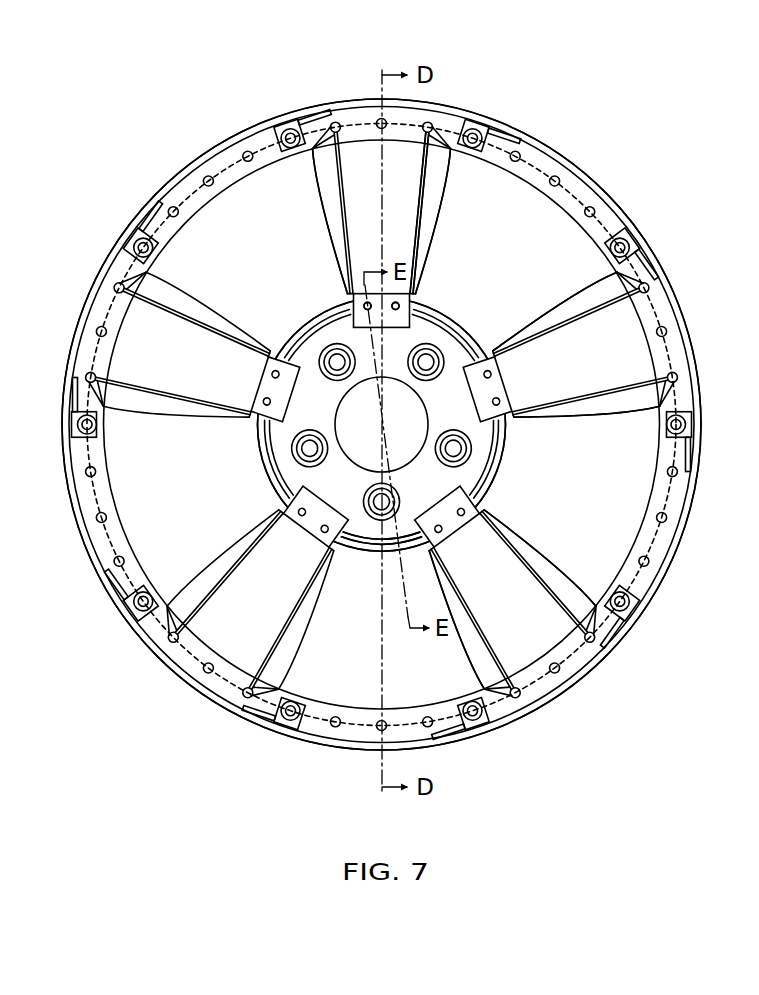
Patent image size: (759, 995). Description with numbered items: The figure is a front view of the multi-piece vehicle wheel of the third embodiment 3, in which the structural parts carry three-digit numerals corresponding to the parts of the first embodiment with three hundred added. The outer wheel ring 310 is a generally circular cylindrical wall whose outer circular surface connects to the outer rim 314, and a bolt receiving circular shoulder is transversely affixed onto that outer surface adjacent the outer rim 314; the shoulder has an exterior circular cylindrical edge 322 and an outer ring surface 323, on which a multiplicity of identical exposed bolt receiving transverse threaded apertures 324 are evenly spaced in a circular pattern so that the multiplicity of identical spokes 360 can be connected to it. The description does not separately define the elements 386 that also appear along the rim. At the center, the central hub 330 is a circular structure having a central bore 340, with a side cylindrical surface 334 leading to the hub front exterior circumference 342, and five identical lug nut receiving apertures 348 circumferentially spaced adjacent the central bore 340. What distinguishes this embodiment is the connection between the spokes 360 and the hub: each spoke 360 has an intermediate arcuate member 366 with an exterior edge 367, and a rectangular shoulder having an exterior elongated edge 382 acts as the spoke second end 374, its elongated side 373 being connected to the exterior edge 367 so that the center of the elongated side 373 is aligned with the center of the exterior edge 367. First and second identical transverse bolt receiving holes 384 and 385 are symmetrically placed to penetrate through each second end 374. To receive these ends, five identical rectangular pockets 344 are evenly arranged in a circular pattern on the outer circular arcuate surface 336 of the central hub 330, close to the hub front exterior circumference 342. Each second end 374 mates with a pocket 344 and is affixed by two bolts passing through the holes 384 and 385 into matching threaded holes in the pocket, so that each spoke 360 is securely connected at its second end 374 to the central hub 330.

The third embodiment 3 is at (114, 82).
The outer wheel ring 310 is at (210, 206).
The outer rim 314 is at (193, 162).
The exterior circular cylindrical edge 322 is at (251, 177).
The outer ring surface 323 is at (548, 145).
The bolt receiving transverse threaded apertures 324 is at (244, 151).
The central hub 330 is at (522, 279).
The side cylindrical surface 334 is at (498, 480).
The outer circular arcuate surface 336 is at (405, 490).
The central bore 340 is at (384, 443).
The hub front exterior circumference 342 is at (260, 440).
The rectangular pockets 344 is at (351, 304).
The lug nut receiving apertures 348 is at (428, 361).
The spokes 360 is at (444, 214).
The spoke intermediate arcuate member 366 is at (462, 652).
The exterior edge of spoke intermediate arcuate member 367 is at (343, 236).
The elongated side 373 is at (370, 188).
The second end 374 is at (284, 394).
The exterior elongated edge 382 is at (349, 331).
The first transverse bolt receiving hole 384 is at (465, 316).
The second transverse bolt receiving hole 385 is at (366, 306).
The rim fasteners with pads 386 is at (286, 132).